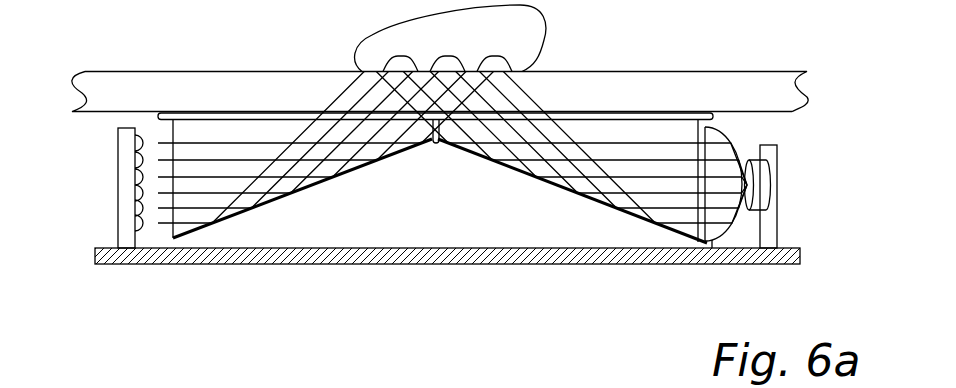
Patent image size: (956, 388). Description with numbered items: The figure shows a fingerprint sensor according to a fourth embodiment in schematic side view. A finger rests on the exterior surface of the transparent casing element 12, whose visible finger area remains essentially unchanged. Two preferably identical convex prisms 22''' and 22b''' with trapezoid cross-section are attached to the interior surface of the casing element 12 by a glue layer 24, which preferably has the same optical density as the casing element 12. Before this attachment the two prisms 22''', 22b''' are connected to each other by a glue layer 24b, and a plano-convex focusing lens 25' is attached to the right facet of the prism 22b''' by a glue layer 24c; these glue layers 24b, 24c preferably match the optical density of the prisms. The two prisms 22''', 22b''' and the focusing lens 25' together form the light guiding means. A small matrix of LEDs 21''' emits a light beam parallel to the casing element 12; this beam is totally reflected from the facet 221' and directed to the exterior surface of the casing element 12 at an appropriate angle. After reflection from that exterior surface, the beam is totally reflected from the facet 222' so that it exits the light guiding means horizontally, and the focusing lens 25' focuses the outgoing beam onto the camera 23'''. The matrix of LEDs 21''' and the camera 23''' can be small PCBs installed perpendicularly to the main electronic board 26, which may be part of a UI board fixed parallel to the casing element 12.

The transparent casing element 12 is at (588, 84).
The glue layer 24 is at (648, 117).
The glue layer 24b is at (432, 143).
The glue layer 24c is at (712, 248).
The matrix of LEDs 21''' is at (100, 188).
The convex prism 22''' is at (326, 148).
The convex prism 22b''' is at (561, 148).
The facet 221' is at (302, 183).
The facet 222' is at (572, 193).
The focusing lens 25' is at (740, 179).
The camera 23''' is at (801, 192).
The main electronic board 26 is at (412, 252).